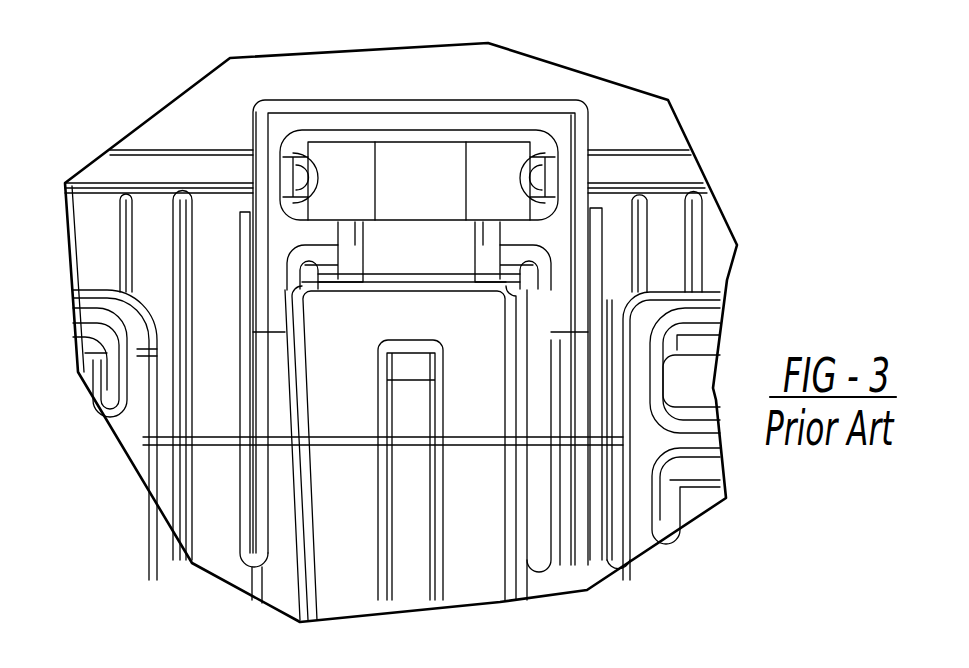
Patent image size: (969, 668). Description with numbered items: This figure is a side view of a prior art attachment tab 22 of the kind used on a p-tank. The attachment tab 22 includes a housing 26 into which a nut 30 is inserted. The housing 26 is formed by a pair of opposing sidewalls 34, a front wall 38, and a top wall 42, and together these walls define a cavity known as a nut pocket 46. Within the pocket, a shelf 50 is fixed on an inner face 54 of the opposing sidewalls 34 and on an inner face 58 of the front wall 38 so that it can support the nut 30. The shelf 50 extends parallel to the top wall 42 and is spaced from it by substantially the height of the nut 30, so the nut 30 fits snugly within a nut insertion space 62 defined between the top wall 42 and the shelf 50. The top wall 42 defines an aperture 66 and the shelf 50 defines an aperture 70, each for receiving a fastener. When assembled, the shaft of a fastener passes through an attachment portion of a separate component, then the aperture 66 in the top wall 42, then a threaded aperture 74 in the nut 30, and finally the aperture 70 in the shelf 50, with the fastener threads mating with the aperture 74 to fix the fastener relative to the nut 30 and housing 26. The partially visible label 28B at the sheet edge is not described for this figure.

The attachment tab 22 is at (660, 18).
The housing 26 is at (763, 45).
The nut 30 is at (737, 107).
The opposing sidewalls 34 is at (777, 180).
The front wall 38 is at (190, 597).
The top wall 42 is at (322, 108).
The nut pocket 46 is at (787, 268).
The shelf 50 is at (372, 290).
The inner face of the sidewalls 54 is at (552, 383).
The inner face of the front wall 58 is at (503, 620).
The nut insertion space 62 is at (415, 297).
The aperture in the top wall 66 is at (443, 30).
The aperture in the shelf 70 is at (547, 40).
The aperture in the nut 74 is at (405, 132).
The connector 28B is at (682, 659).